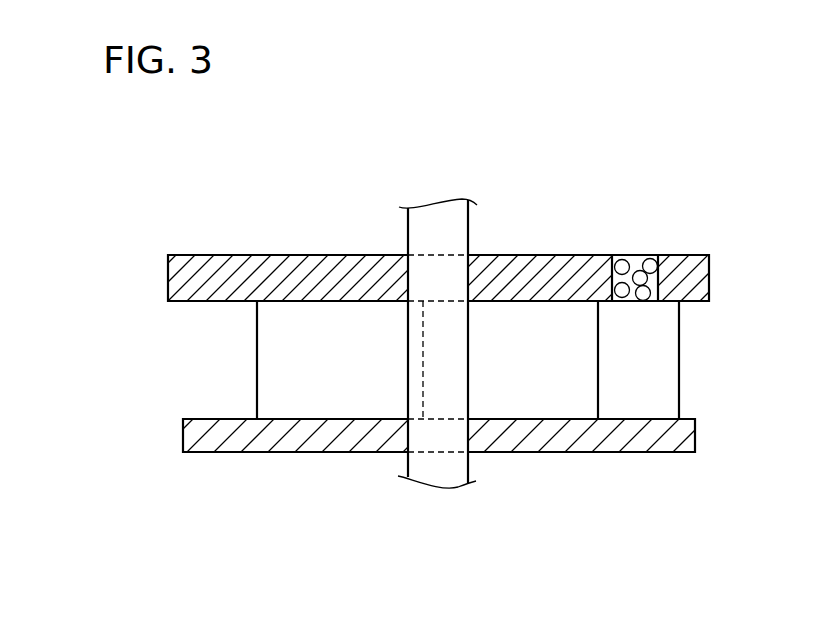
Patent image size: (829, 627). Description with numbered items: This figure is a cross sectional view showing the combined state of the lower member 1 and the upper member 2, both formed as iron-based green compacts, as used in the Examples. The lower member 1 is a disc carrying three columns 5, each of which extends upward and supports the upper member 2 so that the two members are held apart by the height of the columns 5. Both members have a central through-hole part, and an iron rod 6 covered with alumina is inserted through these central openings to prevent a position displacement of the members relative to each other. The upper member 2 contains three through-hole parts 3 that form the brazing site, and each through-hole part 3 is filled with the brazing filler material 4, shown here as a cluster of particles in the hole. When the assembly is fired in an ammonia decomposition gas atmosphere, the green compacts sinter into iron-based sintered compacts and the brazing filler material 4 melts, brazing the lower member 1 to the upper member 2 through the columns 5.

The lower member 1 is at (627, 440).
The upper member 2 is at (299, 268).
The through-hole part 3 is at (638, 258).
The brazing filler material 4 is at (622, 257).
The column 5 is at (257, 357).
The iron rod 6 is at (448, 472).